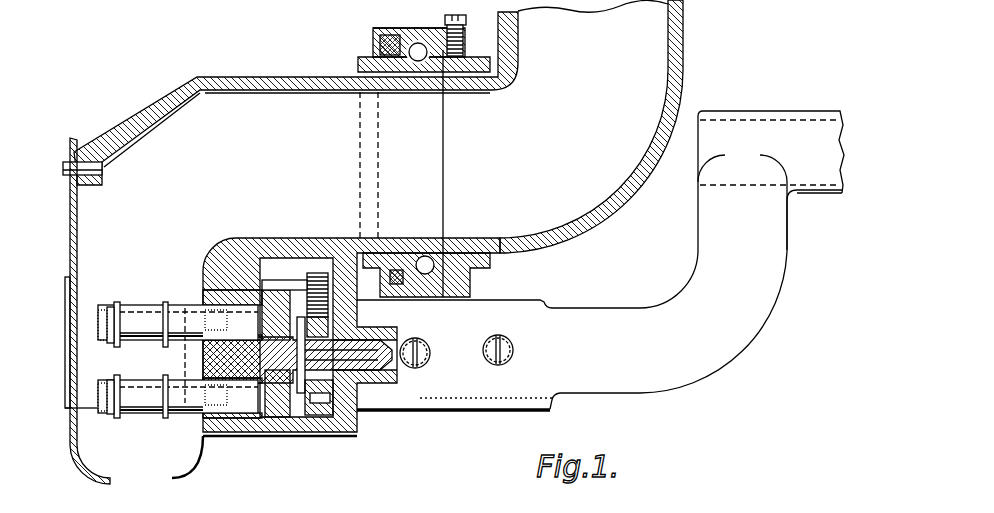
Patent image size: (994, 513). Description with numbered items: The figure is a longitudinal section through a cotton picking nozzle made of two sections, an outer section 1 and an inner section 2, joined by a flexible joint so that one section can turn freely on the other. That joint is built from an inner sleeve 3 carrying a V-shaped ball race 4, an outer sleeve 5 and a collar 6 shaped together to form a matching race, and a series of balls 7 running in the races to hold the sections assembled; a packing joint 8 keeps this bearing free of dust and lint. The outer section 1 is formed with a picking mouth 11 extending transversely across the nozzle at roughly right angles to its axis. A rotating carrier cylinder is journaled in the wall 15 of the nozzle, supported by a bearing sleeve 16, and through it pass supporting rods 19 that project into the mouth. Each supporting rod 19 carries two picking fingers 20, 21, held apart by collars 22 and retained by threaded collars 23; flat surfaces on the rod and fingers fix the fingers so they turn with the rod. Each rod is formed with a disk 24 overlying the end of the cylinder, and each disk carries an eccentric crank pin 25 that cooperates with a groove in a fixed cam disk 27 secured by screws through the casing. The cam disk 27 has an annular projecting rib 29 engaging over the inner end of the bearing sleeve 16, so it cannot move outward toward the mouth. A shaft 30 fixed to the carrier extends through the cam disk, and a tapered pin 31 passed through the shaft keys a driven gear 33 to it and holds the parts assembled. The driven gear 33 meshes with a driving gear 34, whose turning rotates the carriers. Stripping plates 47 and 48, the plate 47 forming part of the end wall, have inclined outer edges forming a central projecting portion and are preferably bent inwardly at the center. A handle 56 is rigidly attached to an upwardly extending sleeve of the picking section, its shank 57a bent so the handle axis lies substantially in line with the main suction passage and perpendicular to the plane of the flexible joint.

The outer section 1 is at (273, 84).
The inner section 2 is at (518, 48).
The inner sleeve 3 is at (402, 74).
The V-shaped ball race 4 is at (413, 254).
The outer sleeve 5 is at (456, 62).
The collar 6 is at (417, 30).
The balls 7 is at (421, 62).
The packing joint 8 is at (380, 46).
The picking mouth 11 is at (146, 453).
The wall 15 is at (255, 318).
The bearing sleeve 16 is at (210, 282).
The supporting rod 19 is at (237, 400).
The picking finger 20 is at (165, 303).
The picking finger 21 is at (116, 300).
The collars 22 is at (162, 354).
The threaded collars 23 is at (100, 303).
The disk 24 is at (222, 270).
The crank pin 25 is at (262, 305).
The cam disk 27 is at (298, 333).
The annular projecting rib 29 is at (274, 288).
The shaft 30 is at (373, 378).
The pin 31 is at (308, 416).
The driven gear 33 is at (336, 405).
The driving gear 34 is at (318, 273).
The stripping plate 47 is at (112, 481).
The stripping plate 48 is at (177, 478).
The handle 56 is at (800, 132).
The shank of the handle 57a is at (727, 320).